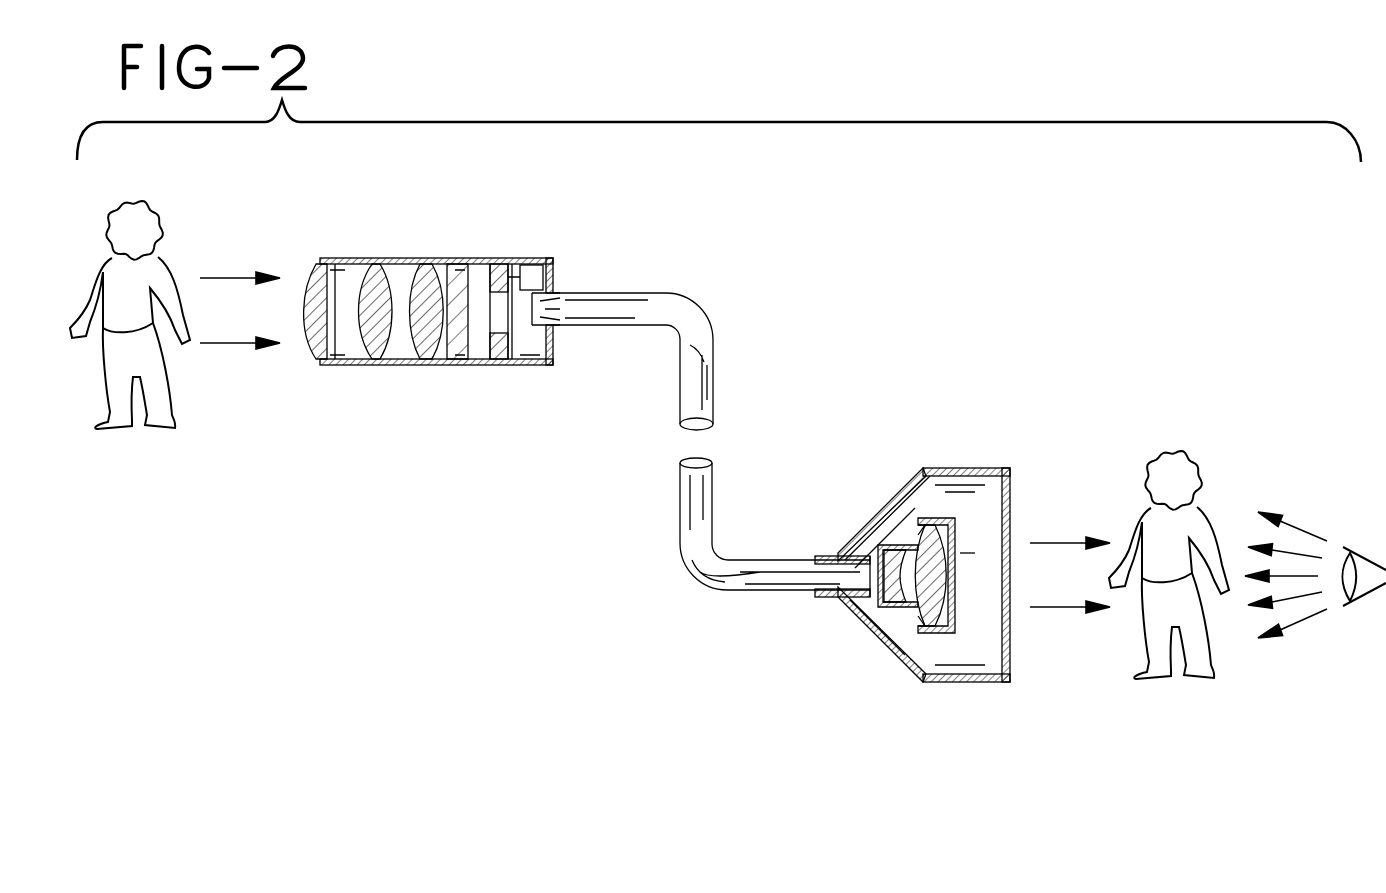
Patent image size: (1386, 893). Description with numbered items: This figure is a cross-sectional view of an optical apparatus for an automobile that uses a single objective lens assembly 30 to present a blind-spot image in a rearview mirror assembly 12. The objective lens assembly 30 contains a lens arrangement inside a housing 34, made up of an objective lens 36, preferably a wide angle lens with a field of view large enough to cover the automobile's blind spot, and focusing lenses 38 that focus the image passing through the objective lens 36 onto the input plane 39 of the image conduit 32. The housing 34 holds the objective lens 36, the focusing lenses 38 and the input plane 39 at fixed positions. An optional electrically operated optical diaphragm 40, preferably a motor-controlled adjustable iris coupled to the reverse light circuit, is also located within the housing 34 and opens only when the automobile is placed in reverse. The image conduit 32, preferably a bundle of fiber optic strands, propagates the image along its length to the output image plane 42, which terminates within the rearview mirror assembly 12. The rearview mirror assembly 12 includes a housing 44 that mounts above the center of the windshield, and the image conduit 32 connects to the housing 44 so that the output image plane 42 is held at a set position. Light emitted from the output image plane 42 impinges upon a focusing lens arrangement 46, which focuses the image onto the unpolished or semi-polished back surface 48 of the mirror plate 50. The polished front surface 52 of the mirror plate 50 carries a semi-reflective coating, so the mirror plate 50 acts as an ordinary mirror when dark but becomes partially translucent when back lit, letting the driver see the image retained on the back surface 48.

The rearview mirror assembly 12 is at (930, 452).
The objective lens assembly 30 is at (405, 242).
The image conduit 32 is at (617, 330).
The housing 34 is at (482, 258).
The objective lens 36 is at (312, 350).
The focusing lenses 38 is at (403, 357).
The input plane 39 is at (550, 303).
The optical diaphragm 40 is at (503, 360).
The output image plane 42 is at (825, 557).
The housing 44 is at (893, 494).
The focusing lens arrangement 46 is at (892, 640).
The back surface 48 is at (973, 476).
The mirror plate 50 is at (1012, 670).
The front surface 52 is at (1012, 510).